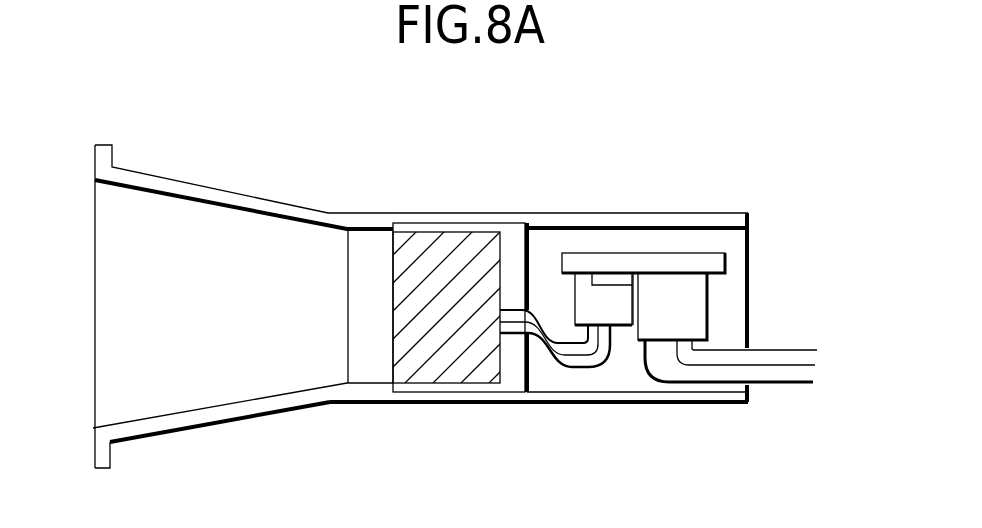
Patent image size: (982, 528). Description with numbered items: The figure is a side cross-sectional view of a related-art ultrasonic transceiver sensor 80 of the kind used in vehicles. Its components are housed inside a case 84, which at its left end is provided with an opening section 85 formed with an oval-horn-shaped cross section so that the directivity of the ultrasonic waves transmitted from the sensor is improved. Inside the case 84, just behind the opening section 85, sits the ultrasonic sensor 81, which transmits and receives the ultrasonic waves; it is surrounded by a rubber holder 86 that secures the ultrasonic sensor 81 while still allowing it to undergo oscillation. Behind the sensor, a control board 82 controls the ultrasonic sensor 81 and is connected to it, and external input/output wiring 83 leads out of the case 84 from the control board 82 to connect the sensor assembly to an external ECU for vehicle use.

The ultrasonic transceiver sensor 80 is at (750, 192).
The ultrasonic sensor 81 is at (418, 242).
The control board 82 is at (648, 265).
The external input/output wiring 83 is at (792, 373).
The case 84 is at (227, 410).
The opening section 85 is at (242, 235).
The rubber holder 86 is at (463, 223).